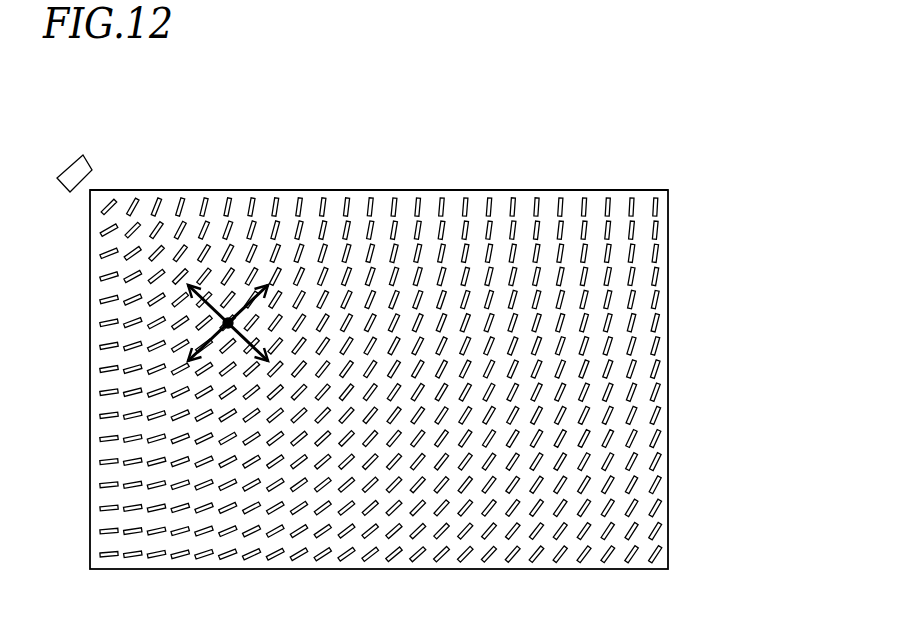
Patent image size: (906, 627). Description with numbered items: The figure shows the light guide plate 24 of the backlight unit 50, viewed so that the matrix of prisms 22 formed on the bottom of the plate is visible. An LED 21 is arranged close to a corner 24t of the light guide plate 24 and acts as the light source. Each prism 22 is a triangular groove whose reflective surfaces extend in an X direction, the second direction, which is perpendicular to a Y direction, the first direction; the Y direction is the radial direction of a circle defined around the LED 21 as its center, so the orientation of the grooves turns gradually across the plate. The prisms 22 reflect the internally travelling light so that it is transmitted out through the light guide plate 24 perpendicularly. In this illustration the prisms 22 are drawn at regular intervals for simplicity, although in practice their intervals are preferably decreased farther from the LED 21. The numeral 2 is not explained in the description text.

The display device 2 is at (699, 247).
The LED 21 is at (80, 169).
The prisms 22 is at (633, 418).
The light guide plate 24 is at (660, 516).
The corner of the light guide plate 24t is at (90, 188).
The backlight unit 50 is at (574, 140).
The X direction X is at (218, 323).
The Y direction Y is at (203, 303).